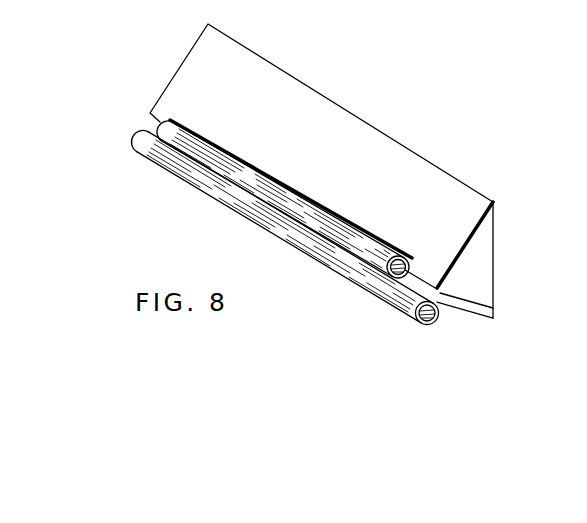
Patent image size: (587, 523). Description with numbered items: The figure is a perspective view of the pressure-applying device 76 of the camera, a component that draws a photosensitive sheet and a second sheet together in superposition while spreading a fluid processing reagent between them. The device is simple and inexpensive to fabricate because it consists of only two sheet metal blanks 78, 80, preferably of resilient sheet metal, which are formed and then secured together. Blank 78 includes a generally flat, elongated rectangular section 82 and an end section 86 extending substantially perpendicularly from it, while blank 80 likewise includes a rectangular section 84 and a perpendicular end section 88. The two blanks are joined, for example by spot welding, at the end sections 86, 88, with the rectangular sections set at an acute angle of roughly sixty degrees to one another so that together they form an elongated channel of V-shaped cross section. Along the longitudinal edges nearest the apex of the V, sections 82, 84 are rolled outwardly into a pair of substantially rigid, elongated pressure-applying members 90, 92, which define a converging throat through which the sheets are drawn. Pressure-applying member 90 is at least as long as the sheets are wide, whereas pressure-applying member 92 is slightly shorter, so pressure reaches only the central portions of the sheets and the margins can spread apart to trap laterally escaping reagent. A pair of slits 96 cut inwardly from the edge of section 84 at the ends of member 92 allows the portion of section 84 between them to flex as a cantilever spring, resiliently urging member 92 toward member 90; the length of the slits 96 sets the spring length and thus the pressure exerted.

The pressure-applying device 76 is at (140, 98).
The blank 78 is at (390, 320).
The blank 80 is at (303, 200).
The rectangular section 82 is at (463, 314).
The rectangular section 84 is at (326, 116).
The end section 86 is at (483, 312).
The end section 88 is at (483, 279).
The pressure-applying member 90 is at (332, 262).
The pressure-applying member 92 is at (245, 175).
The slits 96 is at (200, 117).